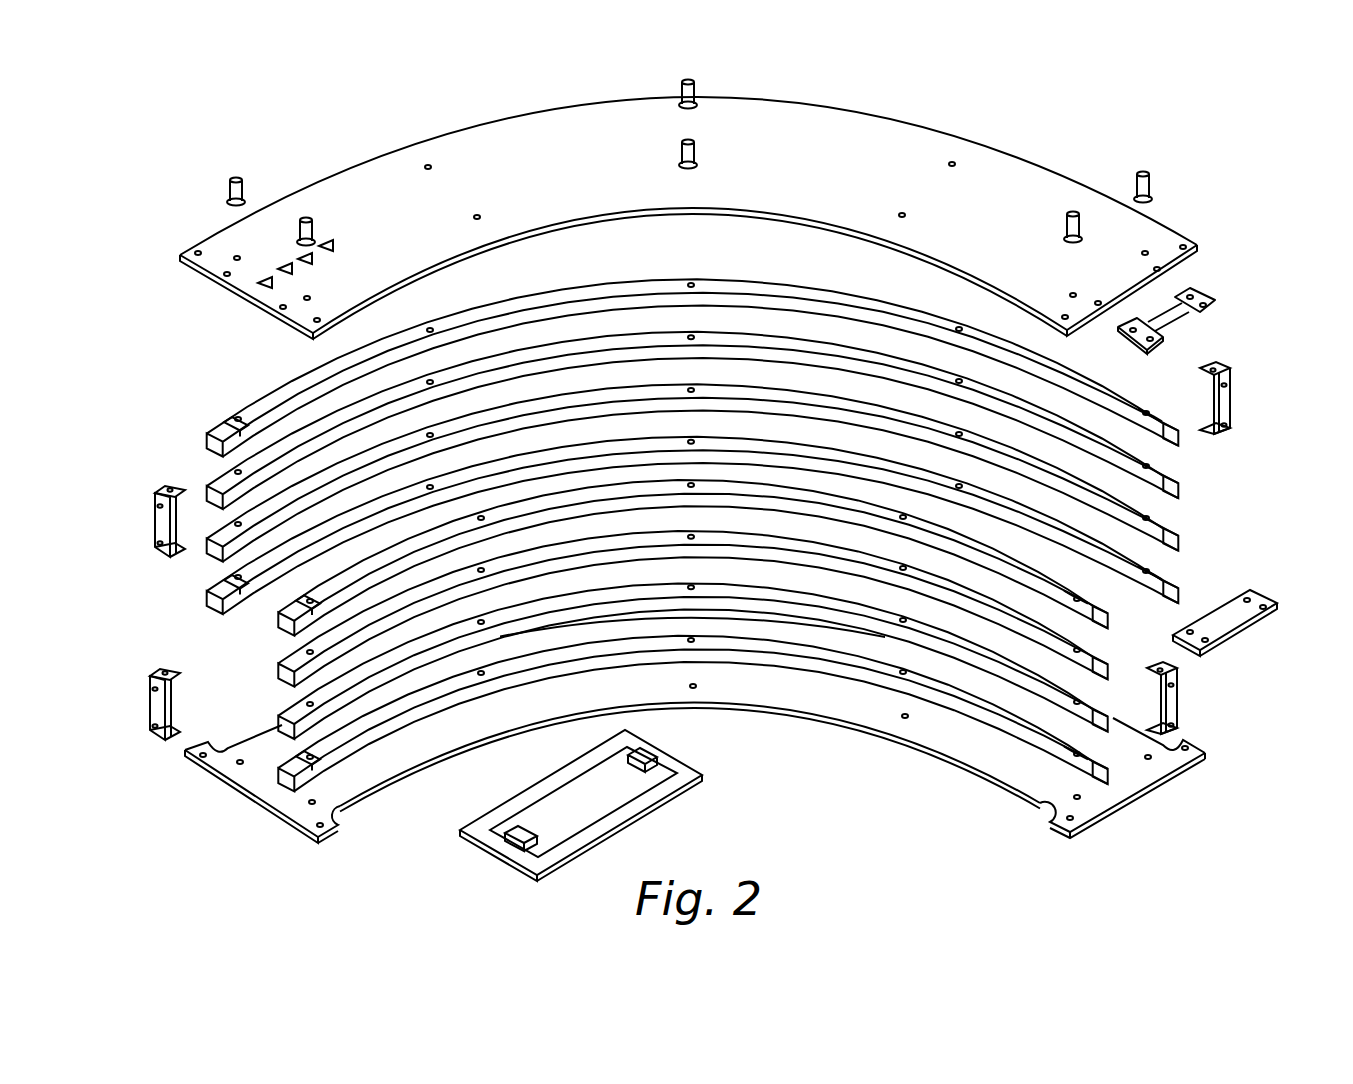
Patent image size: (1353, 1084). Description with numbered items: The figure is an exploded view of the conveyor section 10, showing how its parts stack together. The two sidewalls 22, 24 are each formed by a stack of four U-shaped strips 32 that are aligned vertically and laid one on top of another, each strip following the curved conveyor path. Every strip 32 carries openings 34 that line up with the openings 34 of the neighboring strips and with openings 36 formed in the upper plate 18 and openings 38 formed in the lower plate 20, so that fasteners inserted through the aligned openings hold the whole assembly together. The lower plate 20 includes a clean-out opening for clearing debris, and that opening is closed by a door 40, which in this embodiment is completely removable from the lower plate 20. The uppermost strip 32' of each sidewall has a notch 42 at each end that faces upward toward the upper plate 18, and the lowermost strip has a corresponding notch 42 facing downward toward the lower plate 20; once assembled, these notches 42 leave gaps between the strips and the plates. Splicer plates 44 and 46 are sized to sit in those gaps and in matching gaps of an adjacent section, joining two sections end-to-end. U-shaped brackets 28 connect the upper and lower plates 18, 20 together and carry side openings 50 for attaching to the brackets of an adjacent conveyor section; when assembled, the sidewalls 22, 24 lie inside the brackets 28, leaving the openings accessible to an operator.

The conveyor section 10 is at (1235, 183).
The upper plate 18 is at (873, 133).
The lower plate 20 is at (703, 712).
The sidewall 22 is at (868, 700).
The sidewall 24 is at (1200, 527).
The U-shaped bracket 28 is at (158, 520).
The strip 32 is at (753, 560).
The uppermost strip 32' is at (692, 489).
The opening 34 is at (430, 330).
The opening 36 is at (477, 217).
The opening 38 is at (905, 717).
The door 40 is at (660, 808).
The notch 42 is at (218, 428).
The splicer plate 44 is at (1200, 300).
The splicer plate 46 is at (1255, 595).
The side opening 50 is at (160, 540).